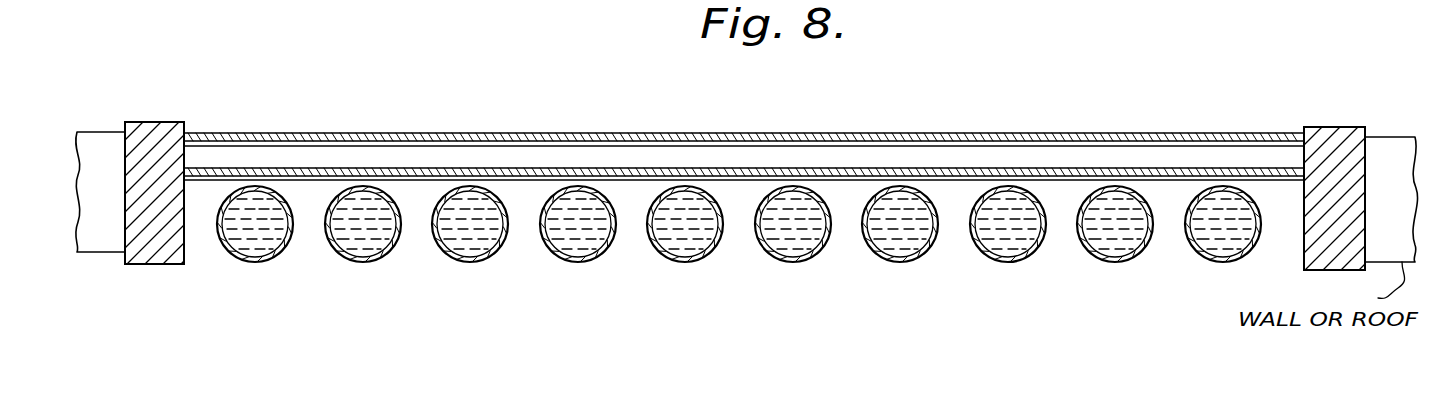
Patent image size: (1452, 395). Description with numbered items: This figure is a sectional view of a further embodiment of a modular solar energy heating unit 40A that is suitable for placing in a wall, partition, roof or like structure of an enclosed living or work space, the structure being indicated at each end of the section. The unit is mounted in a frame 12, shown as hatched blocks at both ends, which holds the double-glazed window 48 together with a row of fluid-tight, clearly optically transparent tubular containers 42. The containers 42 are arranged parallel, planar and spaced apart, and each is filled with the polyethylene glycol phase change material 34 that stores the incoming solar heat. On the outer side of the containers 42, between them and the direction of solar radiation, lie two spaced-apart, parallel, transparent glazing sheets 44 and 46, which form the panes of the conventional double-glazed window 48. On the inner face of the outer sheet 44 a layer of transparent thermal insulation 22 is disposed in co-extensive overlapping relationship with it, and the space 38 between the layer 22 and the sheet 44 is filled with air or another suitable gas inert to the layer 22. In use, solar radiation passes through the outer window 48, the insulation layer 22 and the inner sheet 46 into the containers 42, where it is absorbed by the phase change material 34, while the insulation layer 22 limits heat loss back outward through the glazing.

The frame 12 is at (148, 122).
The transparent thermal insulation layer 22 is at (687, 152).
The phase change material 34 is at (363, 240).
The space 38 is at (744, 123).
The modular solar energy heating unit 40A is at (744, 194).
The tubular containers 42 is at (241, 262).
The outer glazing sheet 44 is at (580, 133).
The inner glazing sheet 46 is at (862, 172).
The double-glazed window 48 is at (744, 109).